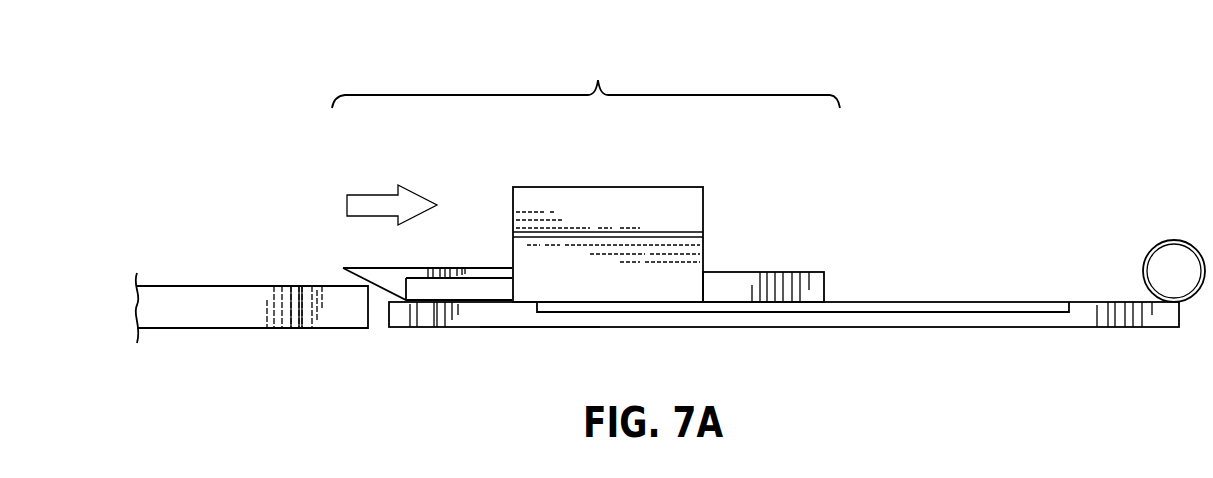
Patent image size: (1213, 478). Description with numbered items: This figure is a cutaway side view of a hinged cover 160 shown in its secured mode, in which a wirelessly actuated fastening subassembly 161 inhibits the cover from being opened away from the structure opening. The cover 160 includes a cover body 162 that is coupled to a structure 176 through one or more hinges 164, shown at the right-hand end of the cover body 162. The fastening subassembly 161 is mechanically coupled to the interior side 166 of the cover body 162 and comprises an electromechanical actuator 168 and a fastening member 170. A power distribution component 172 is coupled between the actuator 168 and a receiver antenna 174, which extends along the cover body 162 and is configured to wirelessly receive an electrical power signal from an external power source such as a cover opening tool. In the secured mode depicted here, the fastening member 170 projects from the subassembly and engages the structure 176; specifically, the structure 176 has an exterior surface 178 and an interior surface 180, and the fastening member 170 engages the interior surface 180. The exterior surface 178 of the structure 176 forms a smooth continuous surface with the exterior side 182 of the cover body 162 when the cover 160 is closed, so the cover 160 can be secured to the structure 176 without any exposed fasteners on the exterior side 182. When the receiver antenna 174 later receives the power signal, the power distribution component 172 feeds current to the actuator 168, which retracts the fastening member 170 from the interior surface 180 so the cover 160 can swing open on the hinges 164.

The hinged cover 160 is at (1027, 223).
The fastening subassembly 161 is at (598, 78).
The cover body 162 is at (480, 313).
The hinges 164 is at (1173, 272).
The interior side 166 is at (427, 305).
The electromechanical actuator 168 is at (597, 200).
The fastening member 170 is at (452, 268).
The power distribution component 172 is at (758, 290).
The receiver antenna 174 is at (872, 307).
The structure 176 is at (222, 314).
The exterior surface 178 is at (338, 330).
The interior surface 180 is at (243, 286).
The exterior side 182 is at (527, 328).